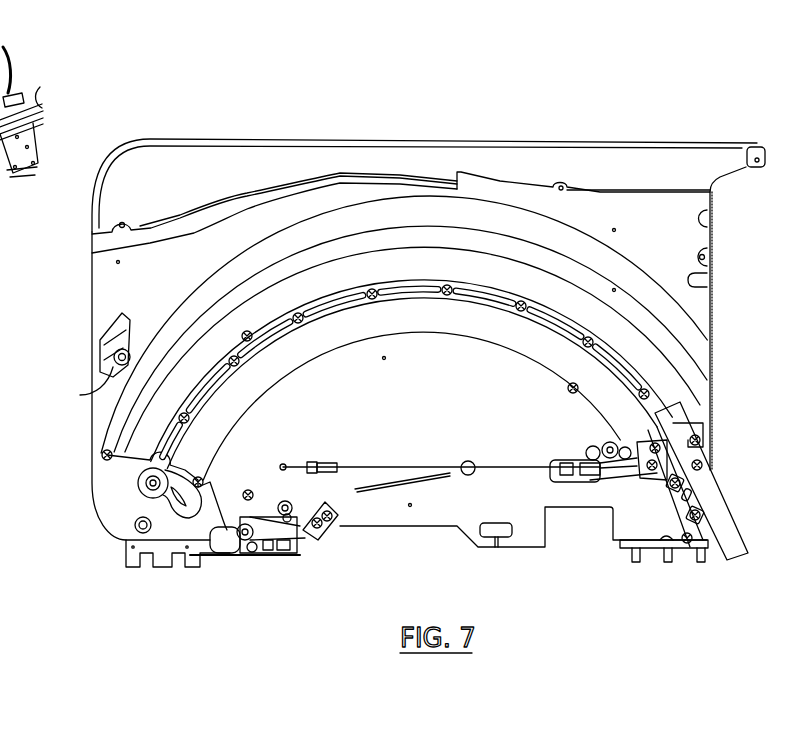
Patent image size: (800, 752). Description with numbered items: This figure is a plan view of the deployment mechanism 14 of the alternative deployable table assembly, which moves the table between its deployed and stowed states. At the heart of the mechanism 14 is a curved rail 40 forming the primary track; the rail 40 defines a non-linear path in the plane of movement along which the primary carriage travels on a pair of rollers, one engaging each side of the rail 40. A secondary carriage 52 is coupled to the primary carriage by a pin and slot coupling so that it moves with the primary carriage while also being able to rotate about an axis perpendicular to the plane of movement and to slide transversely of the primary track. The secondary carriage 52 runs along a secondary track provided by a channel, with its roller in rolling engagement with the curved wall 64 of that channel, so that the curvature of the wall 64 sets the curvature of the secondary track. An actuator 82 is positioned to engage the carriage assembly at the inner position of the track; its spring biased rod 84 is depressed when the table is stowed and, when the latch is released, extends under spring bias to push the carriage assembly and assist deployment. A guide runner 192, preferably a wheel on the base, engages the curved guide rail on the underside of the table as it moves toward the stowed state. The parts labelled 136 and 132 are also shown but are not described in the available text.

The deployment mechanism 14 is at (290, 217).
The wall 64 is at (488, 208).
The top rail 136 is at (613, 140).
The rail 40 is at (437, 297).
The guide track 132 is at (650, 365).
The spring biased rod 84 is at (663, 417).
The actuator 82 is at (717, 510).
The guide runner 192 is at (117, 383).
The secondary carriage 52 is at (105, 488).